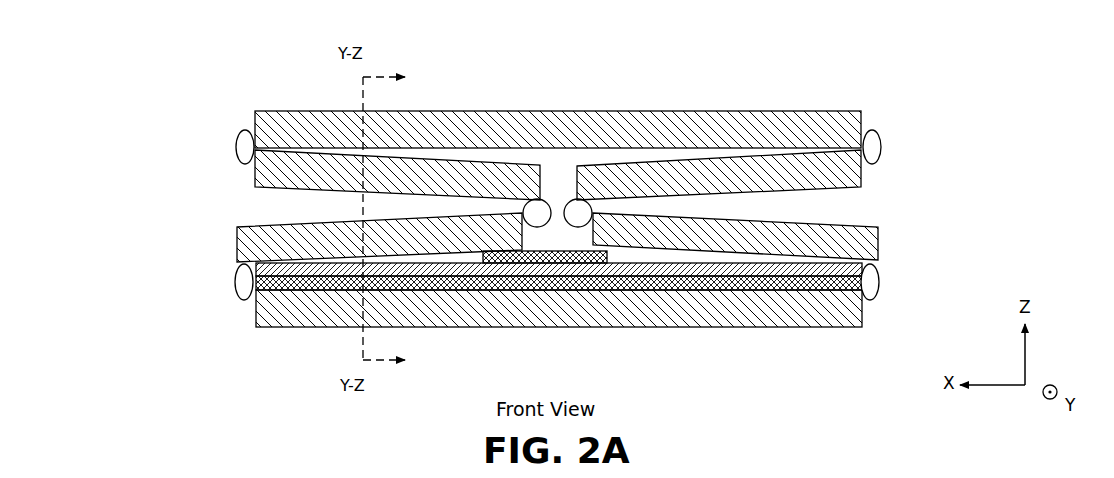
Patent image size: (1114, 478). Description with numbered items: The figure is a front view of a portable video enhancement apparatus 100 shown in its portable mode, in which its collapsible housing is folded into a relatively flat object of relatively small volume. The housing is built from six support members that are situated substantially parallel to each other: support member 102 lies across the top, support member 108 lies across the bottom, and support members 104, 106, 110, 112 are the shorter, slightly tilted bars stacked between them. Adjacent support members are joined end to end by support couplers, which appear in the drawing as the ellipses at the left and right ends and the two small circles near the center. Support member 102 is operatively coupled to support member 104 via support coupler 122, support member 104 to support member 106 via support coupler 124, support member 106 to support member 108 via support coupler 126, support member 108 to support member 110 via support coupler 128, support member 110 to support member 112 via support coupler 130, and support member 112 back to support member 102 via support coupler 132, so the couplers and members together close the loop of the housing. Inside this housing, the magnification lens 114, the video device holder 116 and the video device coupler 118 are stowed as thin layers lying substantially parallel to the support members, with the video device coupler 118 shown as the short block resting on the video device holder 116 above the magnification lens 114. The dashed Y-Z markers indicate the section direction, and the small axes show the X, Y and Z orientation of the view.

The portable video enhancement apparatus 100 is at (899, 106).
The support member 102 is at (446, 124).
The support member 104 is at (745, 180).
The support member 106 is at (805, 233).
The support member 108 is at (810, 307).
The support member 110 is at (240, 247).
The support member 112 is at (258, 182).
The magnification lens 114 is at (723, 283).
The video device holder 116 is at (640, 270).
The video device coupler 118 is at (557, 255).
The support coupler 122 is at (868, 147).
The support coupler 124 is at (574, 199).
The support coupler 126 is at (872, 282).
The support coupler 128 is at (248, 283).
The support coupler 130 is at (537, 199).
The support coupler 132 is at (249, 148).